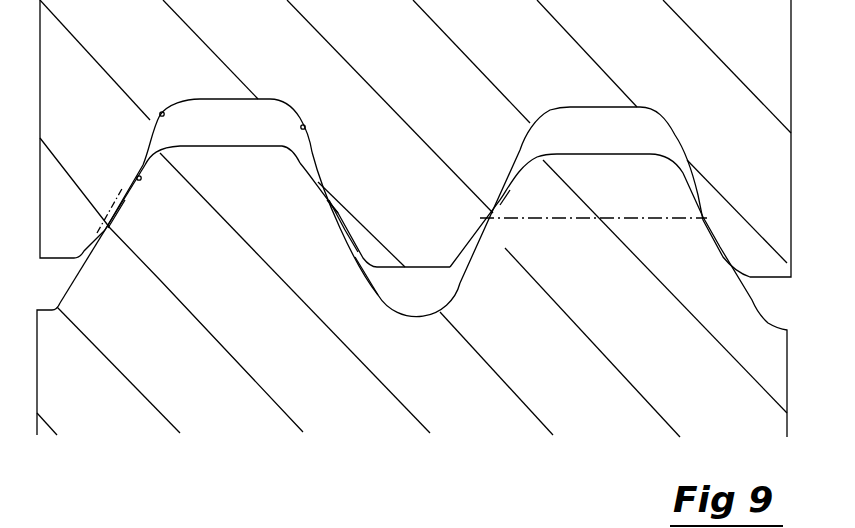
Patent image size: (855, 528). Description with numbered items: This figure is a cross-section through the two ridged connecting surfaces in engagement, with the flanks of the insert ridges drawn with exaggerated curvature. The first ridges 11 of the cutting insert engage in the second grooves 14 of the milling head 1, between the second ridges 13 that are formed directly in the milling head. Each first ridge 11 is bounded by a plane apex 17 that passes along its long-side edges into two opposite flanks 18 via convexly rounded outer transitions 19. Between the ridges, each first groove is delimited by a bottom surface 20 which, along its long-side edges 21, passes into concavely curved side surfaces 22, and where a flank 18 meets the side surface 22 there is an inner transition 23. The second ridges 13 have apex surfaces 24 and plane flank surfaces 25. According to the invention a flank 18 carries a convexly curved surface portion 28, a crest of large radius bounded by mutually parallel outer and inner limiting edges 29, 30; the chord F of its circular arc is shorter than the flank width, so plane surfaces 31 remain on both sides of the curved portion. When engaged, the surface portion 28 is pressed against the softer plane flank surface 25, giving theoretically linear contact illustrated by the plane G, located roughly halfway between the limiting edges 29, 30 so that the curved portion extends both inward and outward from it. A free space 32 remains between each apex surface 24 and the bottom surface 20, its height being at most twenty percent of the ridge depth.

The milling head 1 is at (50, 115).
The first ridge 11 is at (437, 242).
The second ridge 13 is at (668, 185).
The second groove 14 is at (393, 290).
The apex 17 is at (405, 268).
The flank 18 is at (472, 255).
The outer transition 19 is at (400, 247).
The bottom surface 20 is at (232, 102).
The long-side edge 21 is at (190, 98).
The side surface 22 is at (162, 112).
The inner transition 23 is at (133, 160).
The apex surface 24 is at (220, 146).
The flank surface 25 is at (142, 179).
The convexly curved surface portion 28 is at (124, 208).
The outer limiting edge 29 is at (360, 246).
The inner limiting edge 30 is at (335, 186).
The plane surface 31 is at (330, 185).
The free space 32 is at (596, 122).
The chord F is at (112, 200).
The plane of contact line G is at (593, 207).